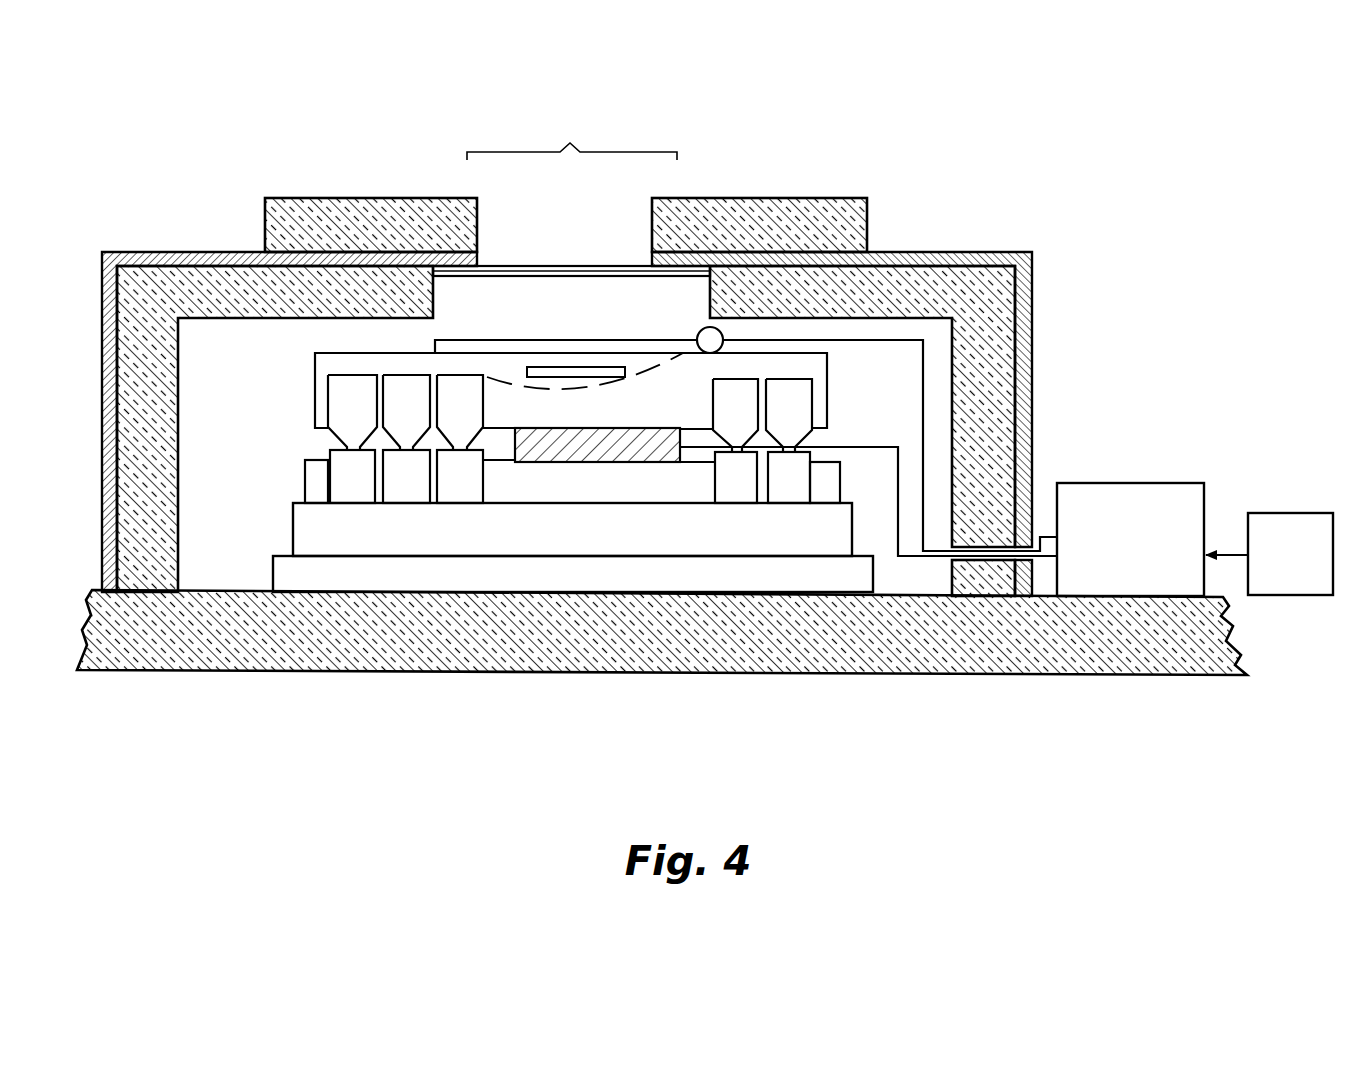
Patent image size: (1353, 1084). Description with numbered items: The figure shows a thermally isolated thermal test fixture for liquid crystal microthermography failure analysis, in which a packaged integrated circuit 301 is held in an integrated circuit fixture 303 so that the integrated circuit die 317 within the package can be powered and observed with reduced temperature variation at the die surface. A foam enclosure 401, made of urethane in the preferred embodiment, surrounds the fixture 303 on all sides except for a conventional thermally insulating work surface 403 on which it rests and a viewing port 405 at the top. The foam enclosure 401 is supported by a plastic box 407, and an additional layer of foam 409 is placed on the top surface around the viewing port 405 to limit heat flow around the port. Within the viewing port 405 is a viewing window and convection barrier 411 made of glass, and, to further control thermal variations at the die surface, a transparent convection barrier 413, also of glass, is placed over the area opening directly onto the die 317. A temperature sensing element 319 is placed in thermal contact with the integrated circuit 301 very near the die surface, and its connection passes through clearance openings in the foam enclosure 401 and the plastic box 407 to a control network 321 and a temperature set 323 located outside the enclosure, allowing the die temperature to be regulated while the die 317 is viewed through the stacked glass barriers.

The packaged integrated circuit 301 is at (315, 372).
The integrated circuit fixture 303 is at (262, 450).
The integrated circuit die 317 is at (555, 368).
The temperature sensing element 319 is at (699, 333).
The control network 321 is at (1170, 483).
The temperature set 323 is at (1316, 597).
The foam enclosure 401 is at (147, 313).
The thermally insulating work surface 403 is at (158, 670).
The viewing port 405 is at (572, 134).
The plastic box 407 is at (135, 252).
The additional layer of foam 409 is at (740, 199).
The viewing window and convection barrier 411 is at (555, 267).
The transparent convection barrier 413 is at (538, 337).